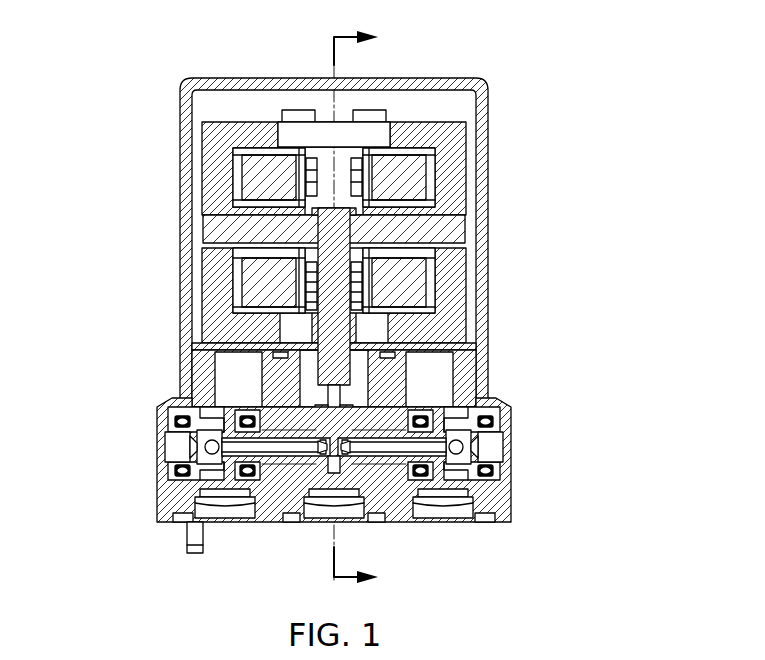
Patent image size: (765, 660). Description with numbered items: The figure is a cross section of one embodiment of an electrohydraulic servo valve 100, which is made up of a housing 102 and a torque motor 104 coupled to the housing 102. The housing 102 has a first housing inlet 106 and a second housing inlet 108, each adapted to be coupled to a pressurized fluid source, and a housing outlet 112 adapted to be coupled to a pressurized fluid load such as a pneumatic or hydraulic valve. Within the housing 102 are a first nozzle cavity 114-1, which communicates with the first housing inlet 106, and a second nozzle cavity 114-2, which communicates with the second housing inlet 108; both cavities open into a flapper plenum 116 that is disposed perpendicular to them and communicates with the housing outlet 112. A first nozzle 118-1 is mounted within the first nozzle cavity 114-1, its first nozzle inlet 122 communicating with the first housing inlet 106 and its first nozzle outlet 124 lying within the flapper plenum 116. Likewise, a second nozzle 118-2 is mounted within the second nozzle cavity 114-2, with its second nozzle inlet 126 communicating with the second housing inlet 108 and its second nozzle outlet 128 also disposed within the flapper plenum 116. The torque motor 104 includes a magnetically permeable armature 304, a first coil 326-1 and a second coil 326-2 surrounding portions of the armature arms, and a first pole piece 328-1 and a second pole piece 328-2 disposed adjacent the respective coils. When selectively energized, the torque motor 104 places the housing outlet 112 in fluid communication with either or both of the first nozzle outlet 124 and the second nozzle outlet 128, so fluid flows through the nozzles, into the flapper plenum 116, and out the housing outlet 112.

The electrohydraulic servo valve 100 is at (146, 106).
The housing 102 is at (536, 403).
The torque motor 104 is at (508, 202).
The first housing inlet 106 is at (225, 513).
The second housing inlet 108 is at (456, 513).
The housing outlet 112 is at (318, 513).
The first nozzle cavity 114-1 is at (150, 447).
The second nozzle cavity 114-2 is at (518, 447).
The flapper plenum 116 is at (344, 460).
The first nozzle 118-1 is at (175, 420).
The second nozzle 118-2 is at (495, 418).
The first nozzle inlet 122 is at (212, 470).
The first nozzle outlet 124 is at (323, 447).
The second nozzle inlet 126 is at (455, 466).
The second nozzle outlet 128 is at (345, 447).
The armature 304 is at (217, 230).
The first coil 326-1 is at (248, 184).
The second coil 326-2 is at (248, 275).
The first pole piece 328-1 is at (457, 147).
The second pole piece 328-2 is at (457, 270).